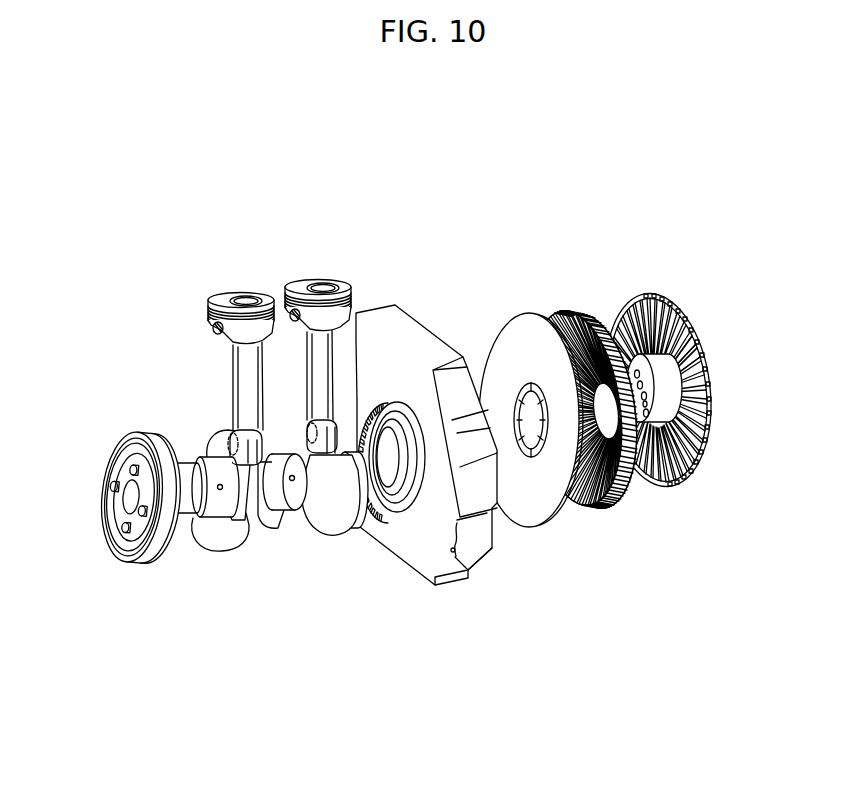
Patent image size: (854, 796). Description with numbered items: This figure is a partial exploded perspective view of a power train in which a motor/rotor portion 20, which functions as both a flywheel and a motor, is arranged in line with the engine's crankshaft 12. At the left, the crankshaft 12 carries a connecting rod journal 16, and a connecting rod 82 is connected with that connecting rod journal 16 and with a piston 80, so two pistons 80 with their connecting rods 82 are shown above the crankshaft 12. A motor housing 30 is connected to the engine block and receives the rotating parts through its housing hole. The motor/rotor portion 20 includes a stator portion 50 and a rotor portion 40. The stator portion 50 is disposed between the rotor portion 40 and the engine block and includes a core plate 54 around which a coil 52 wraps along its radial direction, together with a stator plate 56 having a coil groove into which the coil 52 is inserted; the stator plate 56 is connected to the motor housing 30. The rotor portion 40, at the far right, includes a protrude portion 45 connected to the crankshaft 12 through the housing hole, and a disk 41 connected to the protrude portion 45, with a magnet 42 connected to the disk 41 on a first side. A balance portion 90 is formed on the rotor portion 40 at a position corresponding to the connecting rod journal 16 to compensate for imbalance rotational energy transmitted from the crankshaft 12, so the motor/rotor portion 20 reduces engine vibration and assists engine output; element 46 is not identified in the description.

The crankshaft 12 is at (232, 523).
The connecting rod journal 16 is at (323, 487).
The motor/rotor portion 20 is at (624, 421).
The motor housing 30 is at (450, 587).
The rotor portion 40 is at (682, 358).
The disk 41 is at (712, 417).
The magnet 42 is at (683, 322).
The protrude portion 45 is at (640, 290).
The rotor spoke 46 is at (702, 363).
The stator portion 50 is at (578, 426).
The coil 52 is at (578, 308).
The core plate 54 is at (600, 323).
The stator plate 56 is at (533, 323).
The piston 80 is at (298, 285).
The connecting rod 82 is at (320, 380).
The balance portion 90 is at (665, 290).